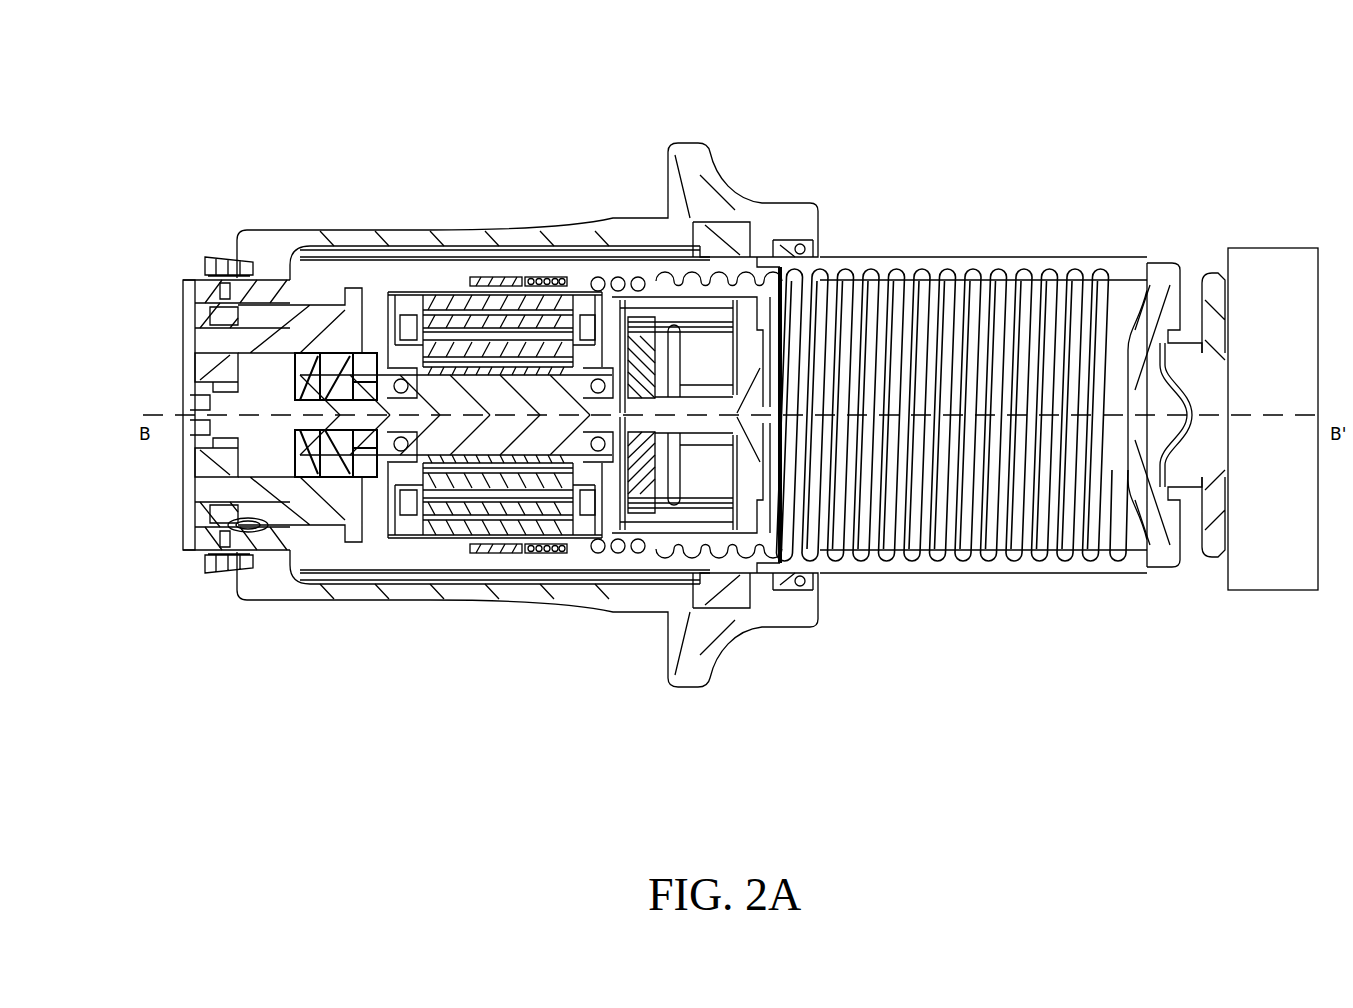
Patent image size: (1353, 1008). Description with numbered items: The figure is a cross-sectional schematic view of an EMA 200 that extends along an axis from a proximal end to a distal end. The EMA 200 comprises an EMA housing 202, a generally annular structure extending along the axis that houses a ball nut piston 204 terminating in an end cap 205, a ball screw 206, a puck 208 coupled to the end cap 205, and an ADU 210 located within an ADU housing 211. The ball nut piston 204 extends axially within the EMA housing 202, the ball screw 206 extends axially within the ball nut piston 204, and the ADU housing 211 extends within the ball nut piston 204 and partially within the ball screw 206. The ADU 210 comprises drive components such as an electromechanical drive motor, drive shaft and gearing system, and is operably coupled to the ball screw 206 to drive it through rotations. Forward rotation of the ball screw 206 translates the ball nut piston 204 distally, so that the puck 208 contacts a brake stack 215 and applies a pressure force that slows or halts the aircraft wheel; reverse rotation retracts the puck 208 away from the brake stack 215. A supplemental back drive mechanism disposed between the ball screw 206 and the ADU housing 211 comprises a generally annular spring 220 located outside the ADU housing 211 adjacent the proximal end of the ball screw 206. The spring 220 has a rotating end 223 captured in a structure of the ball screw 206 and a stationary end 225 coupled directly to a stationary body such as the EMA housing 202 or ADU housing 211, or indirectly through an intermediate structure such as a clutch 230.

The EMA 200 is at (333, 122).
The EMA housing 202 is at (763, 627).
The ball nut piston 204 is at (1055, 575).
The end cap 205 is at (1157, 573).
The ball screw 206 is at (620, 557).
The puck 208 is at (1213, 560).
The ADU 210 is at (473, 470).
The ADU housing 211 is at (432, 547).
The brake stack 215 is at (1273, 543).
The spring 220 is at (540, 275).
The rotating end 223 is at (563, 277).
The stationary end 225 is at (528, 558).
The clutch 230 is at (500, 558).